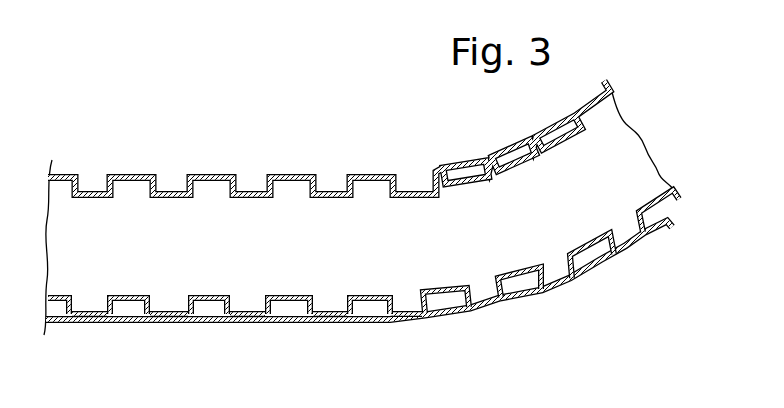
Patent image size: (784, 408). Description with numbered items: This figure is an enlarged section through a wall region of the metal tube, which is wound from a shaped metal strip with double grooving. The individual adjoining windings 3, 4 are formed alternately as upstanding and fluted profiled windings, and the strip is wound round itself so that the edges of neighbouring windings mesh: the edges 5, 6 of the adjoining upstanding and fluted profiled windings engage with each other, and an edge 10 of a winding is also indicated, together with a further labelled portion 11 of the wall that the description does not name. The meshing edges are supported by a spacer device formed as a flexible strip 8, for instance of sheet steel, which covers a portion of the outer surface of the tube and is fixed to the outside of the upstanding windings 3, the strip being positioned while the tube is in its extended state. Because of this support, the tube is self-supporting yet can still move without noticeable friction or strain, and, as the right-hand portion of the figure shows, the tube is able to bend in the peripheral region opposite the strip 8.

The upstanding winding 3 is at (325, 318).
The fluted profiled winding 4 is at (288, 295).
The edge of upstanding winding 5 is at (230, 298).
The edge of fluted winding 6 is at (302, 312).
The flexible strip 8 is at (476, 310).
The edge of winding 10 is at (188, 305).
The inner liner strip 11 is at (192, 318).